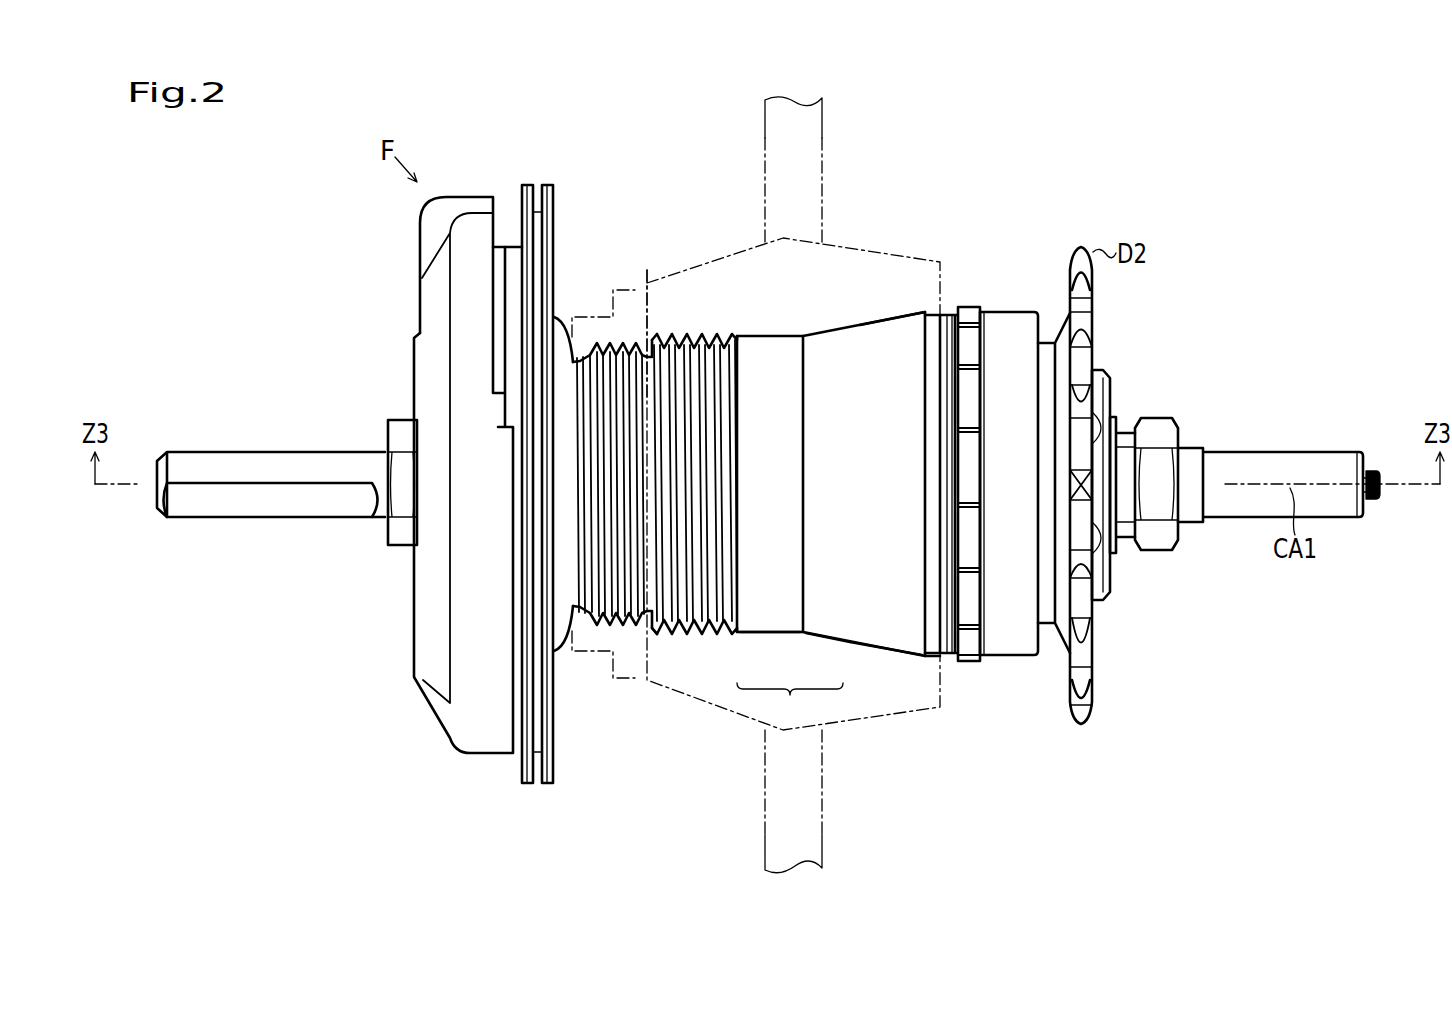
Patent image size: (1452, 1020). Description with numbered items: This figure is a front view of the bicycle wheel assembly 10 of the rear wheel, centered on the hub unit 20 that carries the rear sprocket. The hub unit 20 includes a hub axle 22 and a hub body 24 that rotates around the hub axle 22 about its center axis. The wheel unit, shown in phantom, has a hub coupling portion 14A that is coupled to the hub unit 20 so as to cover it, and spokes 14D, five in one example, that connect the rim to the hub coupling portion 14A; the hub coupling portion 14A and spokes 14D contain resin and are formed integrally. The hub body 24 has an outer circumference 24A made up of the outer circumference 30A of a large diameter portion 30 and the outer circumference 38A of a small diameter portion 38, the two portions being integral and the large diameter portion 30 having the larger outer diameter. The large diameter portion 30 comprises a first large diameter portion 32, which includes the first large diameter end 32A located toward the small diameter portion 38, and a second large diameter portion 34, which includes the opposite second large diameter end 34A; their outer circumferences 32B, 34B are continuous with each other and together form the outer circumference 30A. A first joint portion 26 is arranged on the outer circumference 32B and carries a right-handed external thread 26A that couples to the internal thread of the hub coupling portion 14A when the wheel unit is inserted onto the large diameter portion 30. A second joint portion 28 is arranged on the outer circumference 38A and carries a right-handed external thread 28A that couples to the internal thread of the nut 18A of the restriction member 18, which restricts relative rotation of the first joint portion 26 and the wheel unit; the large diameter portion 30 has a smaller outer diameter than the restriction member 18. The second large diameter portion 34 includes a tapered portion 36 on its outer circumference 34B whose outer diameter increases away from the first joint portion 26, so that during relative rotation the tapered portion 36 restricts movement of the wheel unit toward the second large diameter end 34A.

The wheel assembly 10 is at (1221, 94).
The hub coupling portion 14A is at (862, 246).
The spokes 14D is at (822, 118).
The restriction member 18 is at (592, 262).
The nut 18A is at (603, 290).
The hub unit 20 is at (1035, 213).
The hub axle 22 is at (1285, 452).
The hub body 24 is at (932, 283).
The outer circumference of the hub body 24A is at (881, 663).
The first joint portion 26 is at (701, 444).
The external thread of the first joint portion 26A is at (681, 328).
The second joint portion 28 is at (585, 328).
The external thread of the second joint portion 28A is at (635, 338).
The large diameter portion 30 is at (787, 485).
The outer circumference of the large diameter portion 30A is at (790, 705).
The first large diameter portion 32 is at (768, 334).
The first large diameter end 32A is at (650, 622).
The outer circumference of the first large diameter portion 32B is at (758, 635).
The second large diameter portion 34 is at (832, 333).
The second large diameter end 34A is at (938, 660).
The outer circumference of the second large diameter portion 34B is at (833, 641).
The tapered portion 36 is at (891, 302).
The small diameter portion 38 is at (586, 637).
The outer circumference of the small diameter portion 38A is at (644, 610).